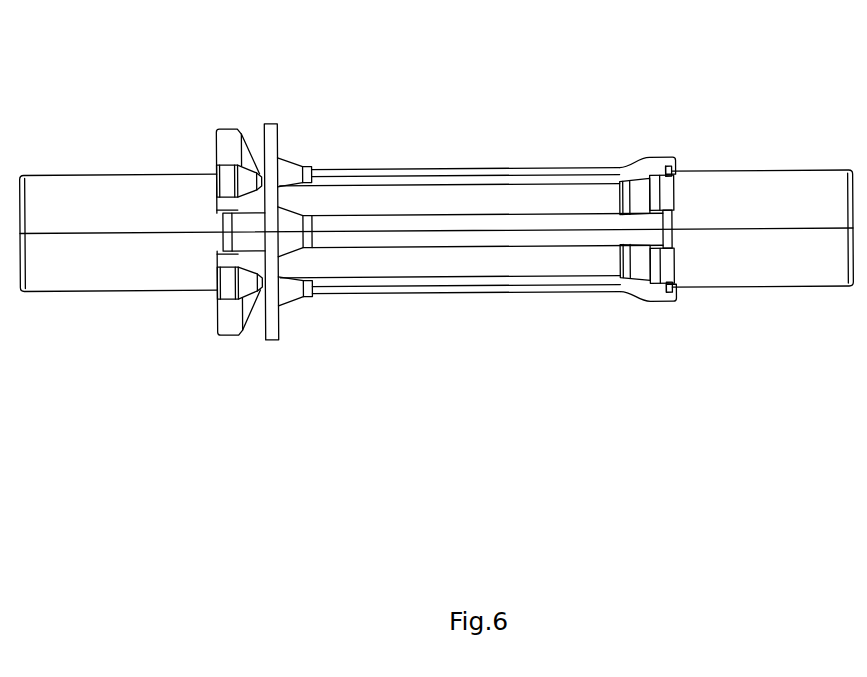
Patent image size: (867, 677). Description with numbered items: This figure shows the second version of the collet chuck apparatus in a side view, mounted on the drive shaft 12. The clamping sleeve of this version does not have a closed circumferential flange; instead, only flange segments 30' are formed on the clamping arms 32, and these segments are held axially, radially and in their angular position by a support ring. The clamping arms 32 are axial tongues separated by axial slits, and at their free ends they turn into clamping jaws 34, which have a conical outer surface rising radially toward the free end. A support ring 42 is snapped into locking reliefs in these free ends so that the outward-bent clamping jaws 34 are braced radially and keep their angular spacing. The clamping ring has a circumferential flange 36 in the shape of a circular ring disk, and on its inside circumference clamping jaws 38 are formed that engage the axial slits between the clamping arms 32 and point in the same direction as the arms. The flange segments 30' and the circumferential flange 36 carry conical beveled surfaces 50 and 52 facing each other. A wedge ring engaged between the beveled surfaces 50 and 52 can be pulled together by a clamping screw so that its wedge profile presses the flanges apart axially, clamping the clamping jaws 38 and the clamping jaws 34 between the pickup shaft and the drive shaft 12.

The drive shaft 12 is at (777, 198).
The flange segments 30' is at (187, 250).
The clamping arms 32 is at (443, 257).
The clamping jaws 34 is at (637, 200).
The circumferential flange 36 is at (270, 330).
The clamping jaws 38 is at (290, 223).
The support ring 42 is at (673, 218).
The conical beveled surface 50 is at (242, 143).
The conical beveled surface 52 is at (255, 160).